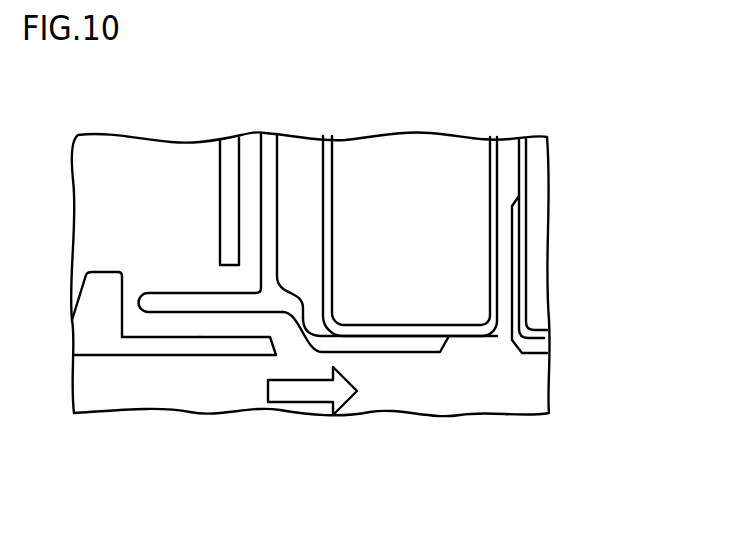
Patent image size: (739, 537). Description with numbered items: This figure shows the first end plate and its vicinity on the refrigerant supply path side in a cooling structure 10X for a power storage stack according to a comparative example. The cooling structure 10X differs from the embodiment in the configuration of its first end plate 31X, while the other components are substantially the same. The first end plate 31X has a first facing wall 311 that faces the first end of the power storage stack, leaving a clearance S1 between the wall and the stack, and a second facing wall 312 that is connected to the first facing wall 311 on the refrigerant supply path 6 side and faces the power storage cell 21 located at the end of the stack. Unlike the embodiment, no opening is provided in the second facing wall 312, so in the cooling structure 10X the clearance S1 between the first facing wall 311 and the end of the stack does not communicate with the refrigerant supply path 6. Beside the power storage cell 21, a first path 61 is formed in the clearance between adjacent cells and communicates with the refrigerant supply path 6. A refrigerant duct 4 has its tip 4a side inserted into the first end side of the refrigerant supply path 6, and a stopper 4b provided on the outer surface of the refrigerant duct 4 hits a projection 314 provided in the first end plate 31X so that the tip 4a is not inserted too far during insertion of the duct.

The cooling structure for a power storage stack 10X is at (567, 114).
The refrigerant supply path 6 is at (522, 402).
The first end plate 31X is at (250, 137).
The first facing wall 311 is at (270, 173).
The second facing wall 312 is at (380, 355).
The projection 314 is at (200, 313).
The clearance S1 is at (303, 175).
The power storage cell 21 is at (413, 195).
The first path 61 is at (507, 156).
The refrigerant duct 4 is at (128, 357).
The tip 4a is at (277, 345).
The stopper 4b is at (105, 271).